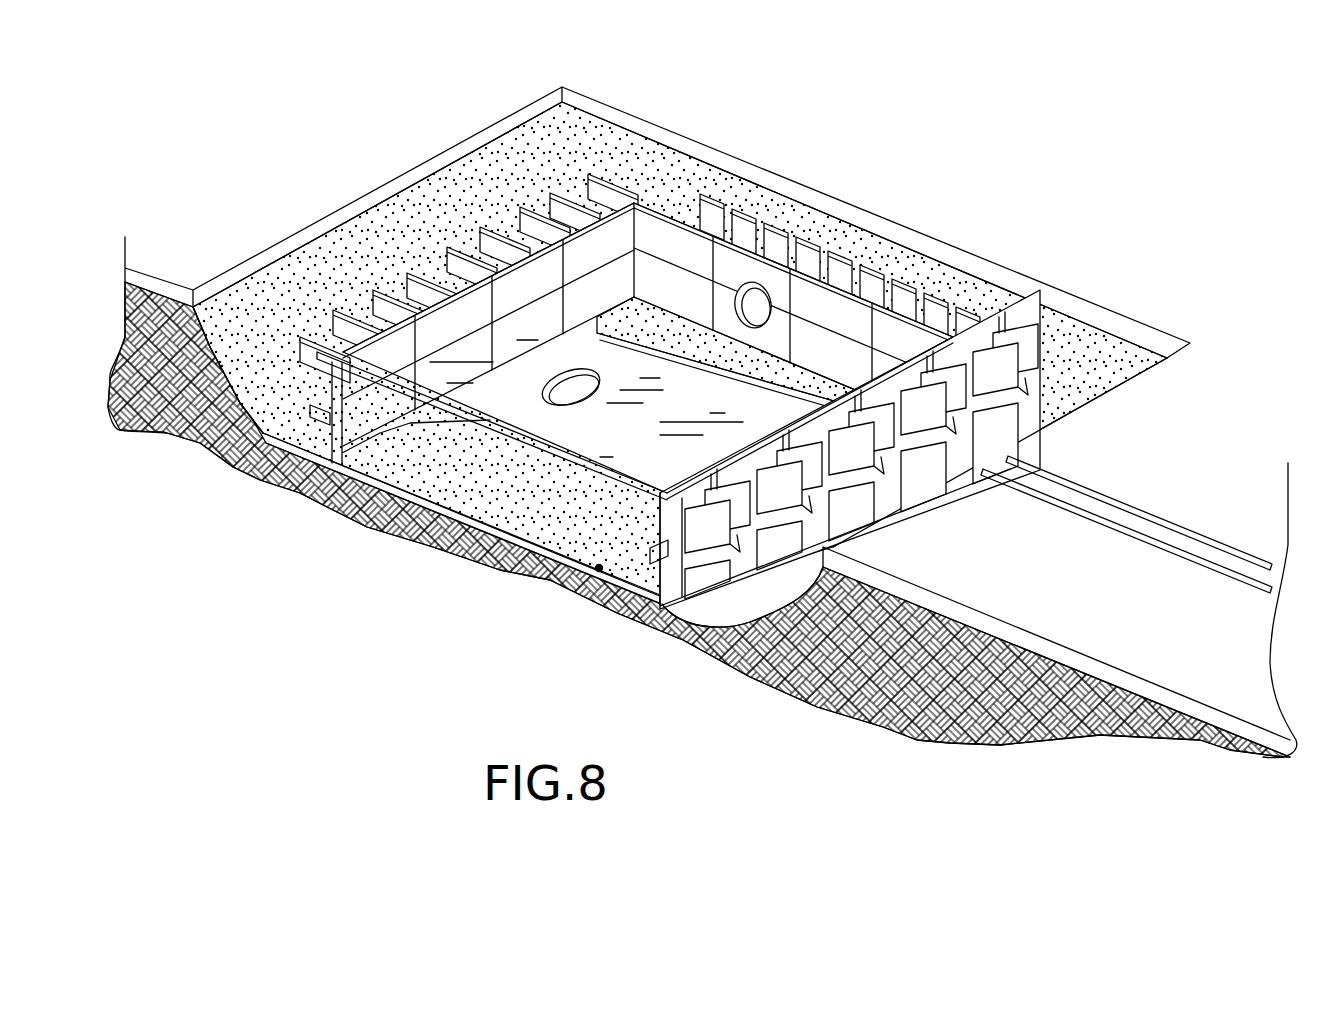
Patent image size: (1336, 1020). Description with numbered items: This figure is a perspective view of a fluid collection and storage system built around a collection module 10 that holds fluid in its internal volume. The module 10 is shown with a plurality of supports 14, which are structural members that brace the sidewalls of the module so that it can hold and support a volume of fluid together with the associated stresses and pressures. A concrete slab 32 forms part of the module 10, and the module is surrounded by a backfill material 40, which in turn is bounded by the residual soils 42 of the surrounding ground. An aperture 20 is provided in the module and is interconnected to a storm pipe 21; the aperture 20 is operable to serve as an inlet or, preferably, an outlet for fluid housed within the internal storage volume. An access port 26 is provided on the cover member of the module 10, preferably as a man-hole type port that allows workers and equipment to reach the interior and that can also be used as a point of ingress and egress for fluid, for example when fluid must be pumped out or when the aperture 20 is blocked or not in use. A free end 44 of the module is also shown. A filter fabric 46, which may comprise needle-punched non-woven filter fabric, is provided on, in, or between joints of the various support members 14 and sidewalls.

The collection module 10 is at (1010, 222).
The supports 14 is at (303, 413).
The aperture 20 is at (752, 298).
The storm pipe 21 is at (920, 293).
The access port 26 is at (557, 397).
The concrete slab 32 is at (613, 457).
The backfill material 40 is at (563, 153).
The residual soils 42 is at (917, 705).
The free end 44 is at (599, 570).
The filter fabric 46 is at (660, 553).